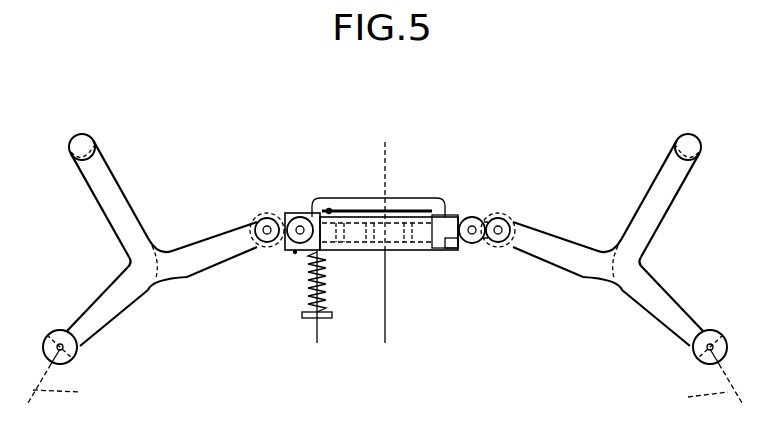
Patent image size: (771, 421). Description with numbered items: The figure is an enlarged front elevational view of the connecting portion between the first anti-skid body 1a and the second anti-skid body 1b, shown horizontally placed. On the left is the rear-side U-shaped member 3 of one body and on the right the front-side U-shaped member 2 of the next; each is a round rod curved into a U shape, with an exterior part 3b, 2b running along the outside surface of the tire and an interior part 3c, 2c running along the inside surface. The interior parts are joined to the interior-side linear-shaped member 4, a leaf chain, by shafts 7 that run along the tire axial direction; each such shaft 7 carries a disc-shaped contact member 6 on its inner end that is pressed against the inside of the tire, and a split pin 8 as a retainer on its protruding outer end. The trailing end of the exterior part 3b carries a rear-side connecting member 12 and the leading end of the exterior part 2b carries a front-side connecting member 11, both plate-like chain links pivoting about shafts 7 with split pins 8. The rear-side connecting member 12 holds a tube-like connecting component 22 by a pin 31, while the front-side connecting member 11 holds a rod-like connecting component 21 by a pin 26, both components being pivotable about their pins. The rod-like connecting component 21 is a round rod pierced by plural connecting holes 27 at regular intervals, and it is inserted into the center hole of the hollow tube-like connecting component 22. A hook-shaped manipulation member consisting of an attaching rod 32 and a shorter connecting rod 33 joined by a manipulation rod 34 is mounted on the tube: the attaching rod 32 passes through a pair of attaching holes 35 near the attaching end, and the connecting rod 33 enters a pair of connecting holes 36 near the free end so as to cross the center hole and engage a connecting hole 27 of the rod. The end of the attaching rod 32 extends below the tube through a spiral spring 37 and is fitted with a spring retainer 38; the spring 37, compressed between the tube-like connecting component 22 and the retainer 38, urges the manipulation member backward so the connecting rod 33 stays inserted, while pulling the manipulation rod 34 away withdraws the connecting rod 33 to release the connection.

The first anti-skid body 1a is at (81, 259).
The second anti-skid body 1b is at (687, 264).
The front-side U-shaped member 2 is at (608, 219).
The exterior part of front-side U-shaped member 2b is at (597, 255).
The interior part of front-side U-shaped member 2c is at (617, 287).
The rear-side U-shaped member 3 is at (162, 215).
The exterior part of rear-side U-shaped member 3b is at (173, 253).
The interior part of rear-side U-shaped member 3c is at (147, 296).
The interior-side linear-shaped member 4 is at (385, 380).
The contact member 6 is at (46, 333).
The shaft 7 is at (258, 220).
The split pin 8 is at (265, 226).
The front-side connecting member 11 is at (505, 247).
The rear-side connecting member 12 is at (289, 249).
The rod-like connecting component 21 is at (385, 184).
The tube-like connecting component 22 is at (389, 300).
The pin 26 is at (472, 217).
The connecting holes 27 is at (420, 250).
The pin 31 is at (300, 217).
The attaching rod 32 is at (317, 350).
The connecting rod 33 is at (434, 250).
The manipulation rod 34 is at (417, 198).
The attaching holes 35 is at (329, 209).
The connecting holes 36 is at (450, 250).
The spiral spring 37 is at (328, 287).
The spring retainer 38 is at (322, 316).